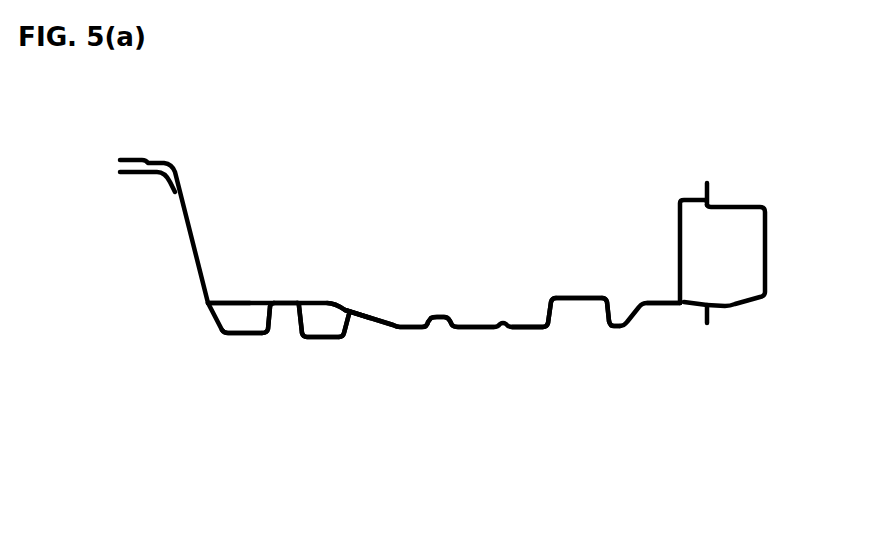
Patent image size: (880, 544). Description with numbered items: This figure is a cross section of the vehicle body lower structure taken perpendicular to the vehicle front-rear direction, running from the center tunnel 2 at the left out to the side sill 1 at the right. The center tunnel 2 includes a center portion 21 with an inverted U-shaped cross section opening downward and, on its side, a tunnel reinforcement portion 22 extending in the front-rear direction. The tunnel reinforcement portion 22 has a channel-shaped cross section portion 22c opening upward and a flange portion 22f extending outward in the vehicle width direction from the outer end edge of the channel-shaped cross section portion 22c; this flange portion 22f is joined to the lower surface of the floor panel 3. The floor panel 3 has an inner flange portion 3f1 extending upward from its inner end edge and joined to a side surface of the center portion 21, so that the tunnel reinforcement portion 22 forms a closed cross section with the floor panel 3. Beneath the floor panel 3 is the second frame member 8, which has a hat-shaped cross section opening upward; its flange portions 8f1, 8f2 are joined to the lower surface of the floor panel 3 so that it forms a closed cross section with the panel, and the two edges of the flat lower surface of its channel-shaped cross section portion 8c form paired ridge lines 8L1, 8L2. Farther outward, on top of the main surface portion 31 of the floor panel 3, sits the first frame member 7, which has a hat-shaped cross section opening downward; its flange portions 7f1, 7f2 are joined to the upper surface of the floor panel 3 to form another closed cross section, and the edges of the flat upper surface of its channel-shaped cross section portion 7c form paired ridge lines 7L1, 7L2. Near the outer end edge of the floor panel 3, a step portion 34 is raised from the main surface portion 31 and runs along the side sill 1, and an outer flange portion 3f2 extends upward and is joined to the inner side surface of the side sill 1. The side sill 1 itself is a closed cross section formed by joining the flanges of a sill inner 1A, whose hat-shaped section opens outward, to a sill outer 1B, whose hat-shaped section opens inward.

The side sill 1 is at (721, 207).
The sill inner 1A is at (697, 198).
The sill outer 1B is at (736, 219).
The center tunnel 2 is at (197, 323).
The center portion 21 is at (183, 243).
The tunnel reinforcement portion 22 is at (219, 372).
The channel-shaped cross section portion 22c is at (237, 338).
The flange portion 22f is at (268, 333).
The floor panel 3 is at (375, 315).
The main surface portion 31 is at (397, 323).
The inner flange portion 3f1 is at (208, 296).
The outer flange portion 3f2 is at (678, 298).
The step portion 34 is at (658, 303).
The first frame member 7 is at (564, 265).
The channel-shaped cross section portion 7c is at (561, 297).
The ridge line 7L1 is at (611, 318).
The ridge line 7L2 is at (547, 300).
The flange portion 7f1 is at (618, 323).
The flange portion 7f2 is at (527, 325).
The second frame member 8 is at (329, 366).
The channel-shaped cross section portion 8c is at (317, 340).
The ridge line 8L1 is at (297, 320).
The ridge line 8L2 is at (343, 340).
The flange portion 8f1 is at (353, 318).
The flange portion 8f2 is at (291, 310).